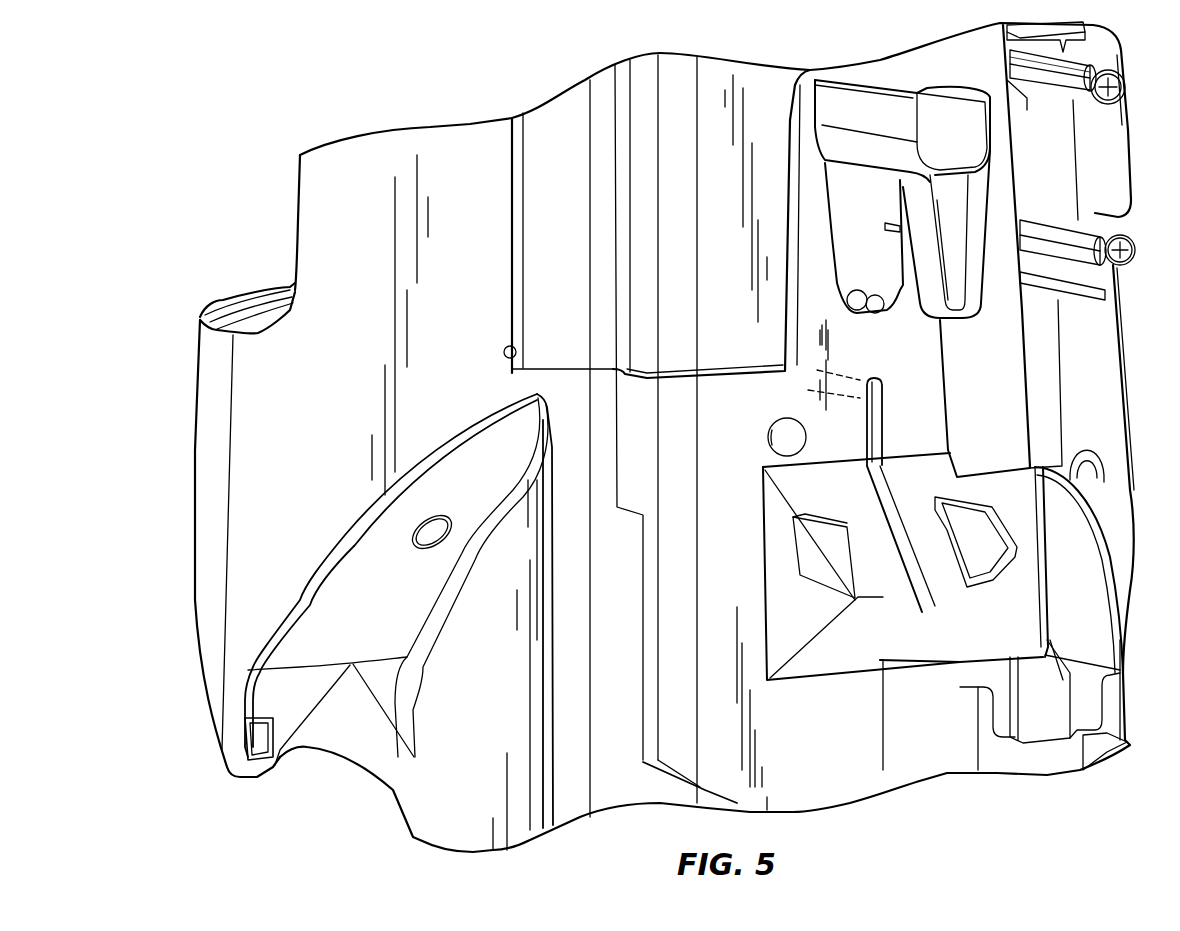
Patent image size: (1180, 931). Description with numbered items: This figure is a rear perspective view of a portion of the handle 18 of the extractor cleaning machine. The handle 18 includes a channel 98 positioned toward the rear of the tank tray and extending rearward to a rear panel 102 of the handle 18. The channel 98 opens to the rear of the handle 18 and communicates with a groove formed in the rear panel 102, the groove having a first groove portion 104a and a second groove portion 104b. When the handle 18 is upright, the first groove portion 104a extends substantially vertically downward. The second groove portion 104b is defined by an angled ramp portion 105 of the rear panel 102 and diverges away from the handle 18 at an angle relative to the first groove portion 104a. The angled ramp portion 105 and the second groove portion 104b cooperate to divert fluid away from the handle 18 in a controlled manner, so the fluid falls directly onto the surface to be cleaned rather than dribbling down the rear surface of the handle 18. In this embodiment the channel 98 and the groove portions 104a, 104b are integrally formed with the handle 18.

The handle 18 is at (770, 97).
The channel 98 is at (867, 380).
The rear panel 102 is at (907, 411).
The first groove portion 104a is at (867, 417).
The second groove portion 104b is at (930, 478).
The angled ramp portion 105 is at (783, 568).